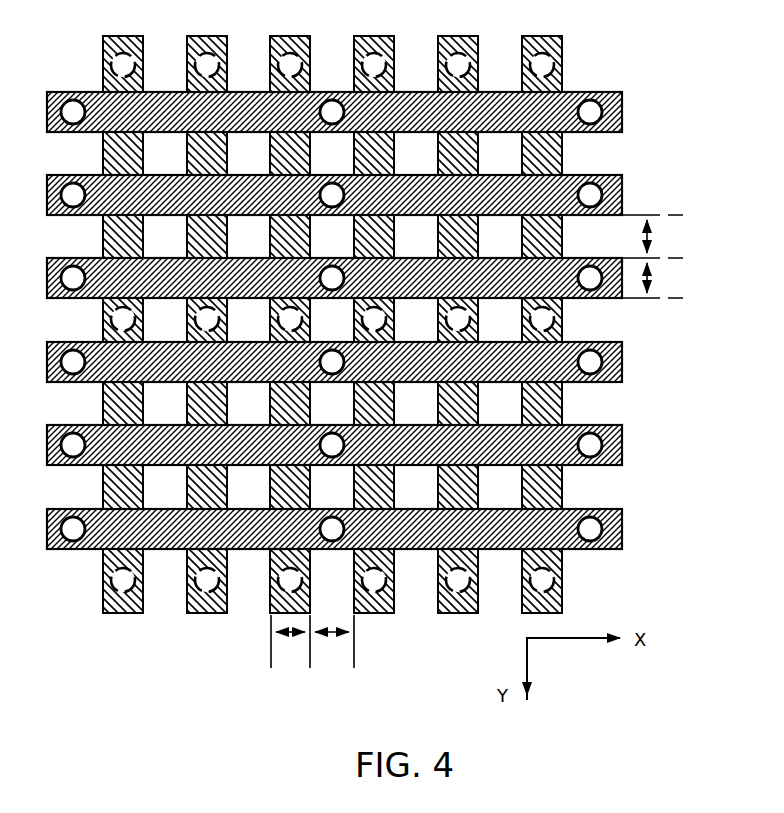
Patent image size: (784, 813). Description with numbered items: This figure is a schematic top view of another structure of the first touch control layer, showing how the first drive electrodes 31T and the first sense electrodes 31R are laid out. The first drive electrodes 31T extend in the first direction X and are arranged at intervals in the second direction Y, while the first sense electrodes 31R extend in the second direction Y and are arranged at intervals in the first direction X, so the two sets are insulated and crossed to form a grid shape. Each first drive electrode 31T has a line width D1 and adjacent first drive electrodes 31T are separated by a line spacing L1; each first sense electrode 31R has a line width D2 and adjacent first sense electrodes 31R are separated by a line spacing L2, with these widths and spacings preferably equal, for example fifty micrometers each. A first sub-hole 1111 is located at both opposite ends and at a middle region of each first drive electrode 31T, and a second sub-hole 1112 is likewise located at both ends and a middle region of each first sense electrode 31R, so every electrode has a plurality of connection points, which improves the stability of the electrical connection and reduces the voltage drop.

The first drive electrode 31T is at (622, 527).
The first sense electrode 31R is at (546, 598).
The first sub-hole 1111 is at (332, 112).
The second sub-hole 1112 is at (537, 69).
The line spacing between adjacent first drive electrodes L1 is at (652, 234).
The line width of the first drive electrode D1 is at (653, 278).
The line width of the first sense electrode D2 is at (290, 642).
The line spacing between adjacent first sense electrodes L2 is at (334, 642).